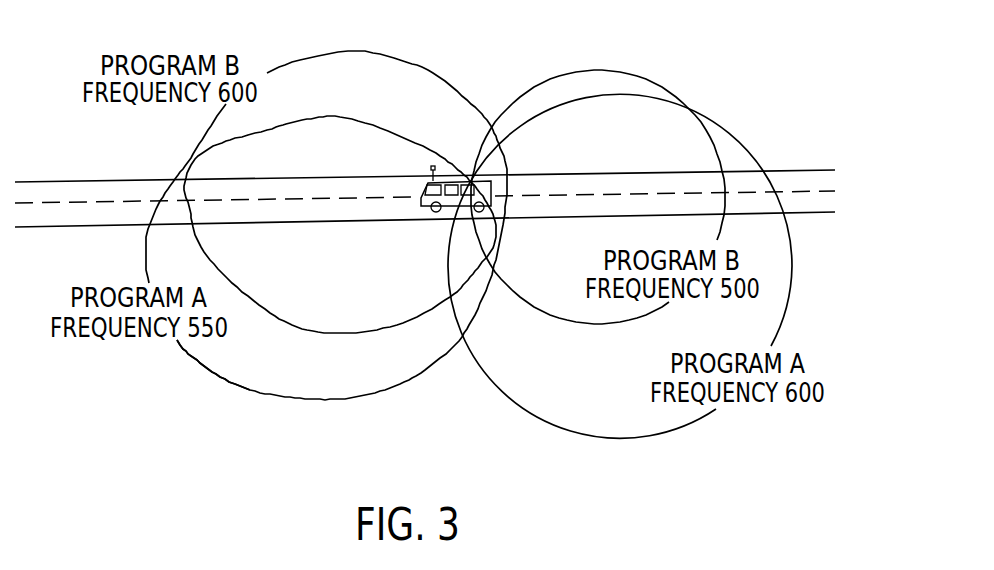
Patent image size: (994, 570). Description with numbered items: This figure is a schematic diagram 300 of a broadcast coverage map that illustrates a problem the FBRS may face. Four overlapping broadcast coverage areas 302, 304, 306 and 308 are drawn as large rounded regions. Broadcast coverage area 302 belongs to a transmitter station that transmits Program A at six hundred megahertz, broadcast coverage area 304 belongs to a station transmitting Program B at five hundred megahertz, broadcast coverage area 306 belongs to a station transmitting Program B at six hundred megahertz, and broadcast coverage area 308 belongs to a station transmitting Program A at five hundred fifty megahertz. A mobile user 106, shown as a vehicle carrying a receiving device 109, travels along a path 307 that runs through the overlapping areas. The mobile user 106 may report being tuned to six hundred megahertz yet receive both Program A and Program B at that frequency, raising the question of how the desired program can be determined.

The schematic diagram 300 is at (251, 416).
The broadcast coverage area 302 is at (538, 419).
The broadcast coverage area 304 is at (625, 67).
The broadcast coverage area 306 is at (333, 47).
The broadcast coverage area 308 is at (222, 377).
The path 307 is at (120, 181).
The mobile user 106 is at (484, 183).
The receiving device 109 is at (418, 167).